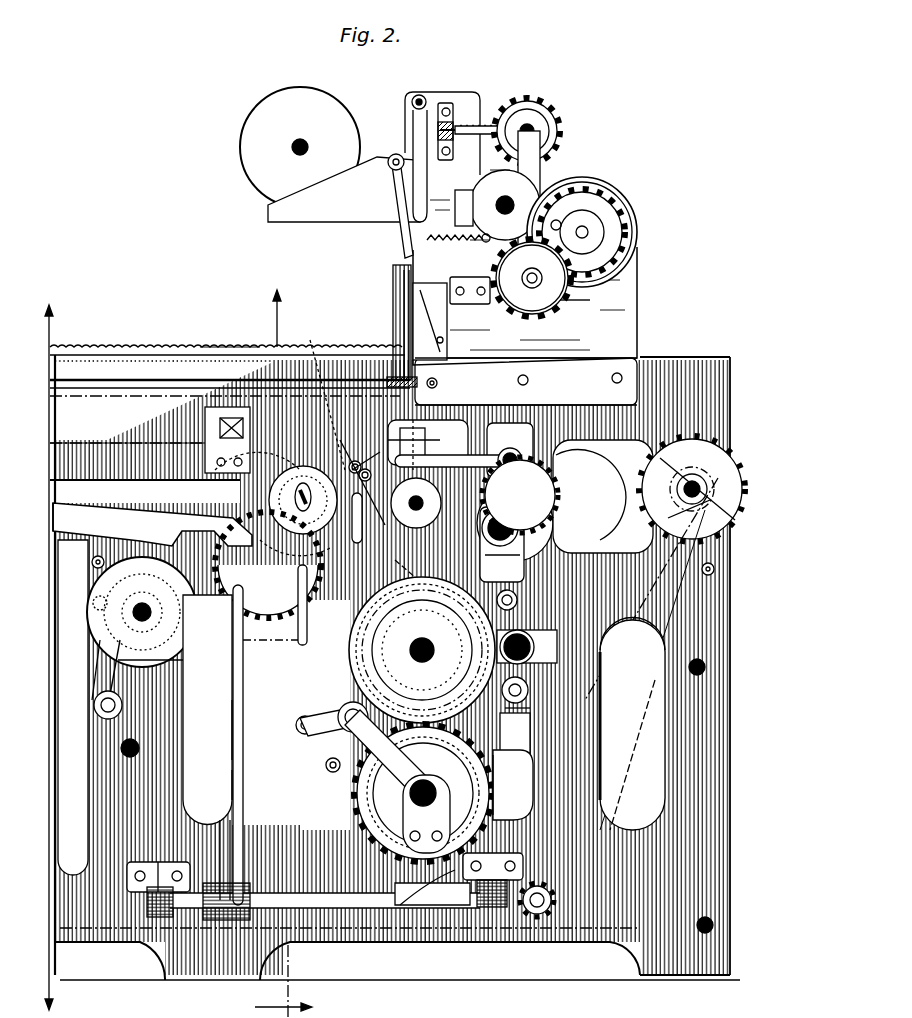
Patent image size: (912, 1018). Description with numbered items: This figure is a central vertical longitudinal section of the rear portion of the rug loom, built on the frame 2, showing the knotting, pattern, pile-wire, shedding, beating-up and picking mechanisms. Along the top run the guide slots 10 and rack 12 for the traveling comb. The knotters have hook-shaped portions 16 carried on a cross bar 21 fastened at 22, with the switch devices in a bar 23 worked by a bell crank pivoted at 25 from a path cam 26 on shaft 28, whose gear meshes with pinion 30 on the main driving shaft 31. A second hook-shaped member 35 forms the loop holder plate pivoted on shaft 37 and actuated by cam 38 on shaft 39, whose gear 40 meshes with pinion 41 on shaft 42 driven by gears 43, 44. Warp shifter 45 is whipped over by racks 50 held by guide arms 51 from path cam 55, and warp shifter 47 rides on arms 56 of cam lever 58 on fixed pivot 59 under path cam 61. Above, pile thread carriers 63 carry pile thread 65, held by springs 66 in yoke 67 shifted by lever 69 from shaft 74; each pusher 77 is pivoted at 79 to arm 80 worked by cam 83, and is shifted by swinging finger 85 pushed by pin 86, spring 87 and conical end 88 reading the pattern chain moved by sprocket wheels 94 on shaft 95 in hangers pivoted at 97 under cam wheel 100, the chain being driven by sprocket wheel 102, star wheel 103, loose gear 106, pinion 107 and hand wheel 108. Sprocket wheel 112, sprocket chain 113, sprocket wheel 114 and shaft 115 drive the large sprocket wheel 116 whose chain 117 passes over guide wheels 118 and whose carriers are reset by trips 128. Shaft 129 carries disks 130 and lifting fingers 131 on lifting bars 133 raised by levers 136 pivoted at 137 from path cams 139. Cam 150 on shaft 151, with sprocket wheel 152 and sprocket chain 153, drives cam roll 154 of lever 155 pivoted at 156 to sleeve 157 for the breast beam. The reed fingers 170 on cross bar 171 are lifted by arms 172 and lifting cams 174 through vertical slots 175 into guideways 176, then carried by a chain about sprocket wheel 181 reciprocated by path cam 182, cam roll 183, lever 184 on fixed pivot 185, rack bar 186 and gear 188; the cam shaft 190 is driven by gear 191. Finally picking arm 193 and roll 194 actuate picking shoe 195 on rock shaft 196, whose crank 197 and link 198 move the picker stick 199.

The frame 2 is at (736, 790).
The guide slots 10 is at (115, 378).
The rack 12 is at (223, 346).
The hook-shaped portion of the knotter 16 is at (412, 335).
The cross bar 21 is at (364, 439).
The fastening point 22 is at (357, 485).
The bar 23 is at (352, 460).
The pivot 25 is at (412, 575).
The path cam 26 is at (395, 640).
The shaft 28 is at (422, 650).
The pinion 30 is at (540, 655).
The main driving shaft 31 is at (560, 640).
The hook-shaped member 35 is at (522, 384).
The shaft 37 is at (500, 460).
The cam 38 is at (540, 523).
The shaft 39 is at (376, 528).
The gear 40 is at (428, 442).
The pinion 41 is at (502, 563).
The shaft 42 is at (500, 516).
The gear 43 is at (558, 505).
The gear 44 is at (499, 728).
The warp shifter 45 is at (440, 460).
The warp shifter 47 is at (350, 465).
The racks 50 is at (420, 420).
The guide arms 51 is at (428, 430).
The path cam 55 is at (585, 470).
The arms 56 is at (300, 596).
The cam lever 58 is at (416, 640).
The fixed pivot 59 is at (518, 602).
The path cam 61 is at (318, 733).
The pile thread carriers 63 is at (397, 285).
The pile thread 65 is at (453, 339).
The springs 66 is at (400, 300).
The yoke 67 is at (468, 306).
The lever 69 is at (395, 270).
The shaft 74 is at (512, 200).
The pusher or actuator 77 is at (425, 240).
The pivot 79 is at (396, 160).
The arm 80 is at (362, 172).
The cam 83 is at (252, 192).
The swinging finger 85 is at (412, 115).
The pin or plunger 86 is at (432, 128).
The spring 87 is at (464, 126).
The conical end 88 is at (488, 125).
The sprocket wheels 94 is at (560, 123).
The shaft 95 is at (530, 122).
The pivot 97 is at (530, 285).
The cam wheel 100 is at (505, 204).
The sprocket wheel 102 is at (575, 290).
The star wheel 103 is at (565, 290).
The loose gear 106 is at (612, 216).
The pinion 107 is at (480, 182).
The hand wheel 108 is at (637, 240).
The sprocket wheel 112 is at (575, 612).
The sprocket chain 113 is at (650, 600).
The sprocket wheel 114 is at (710, 508).
The shaft 115 is at (705, 486).
The large sprocket wheel 116 is at (728, 460).
The chain 117 is at (632, 725).
The guide wheels 118 is at (534, 918).
The trips 128 is at (716, 569).
The shaft 129 is at (285, 556).
The disks or separators 130 is at (303, 508).
The lifting fingers 131 is at (310, 445).
The lifting bars 133 is at (297, 692).
The levers 136 is at (296, 728).
The pivot 137 is at (530, 690).
The path cams 139 is at (520, 712).
The cam 150 is at (125, 635).
The shaft 151 is at (128, 618).
The sprocket wheel 152 is at (147, 721).
The sprocket chain 153 is at (182, 666).
The cam roll 154 is at (92, 603).
The lever 155 is at (95, 680).
The pivot 156 is at (100, 712).
The sleeve 157 is at (92, 562).
The fingers 170 is at (208, 455).
The cross bar 171 is at (232, 534).
The arms 172 is at (56, 516).
The lifting cams 174 is at (236, 690).
The vertical slots 175 is at (235, 498).
The horizontal slots or guideways 176 is at (75, 480).
The sprocket wheel 181 is at (318, 400).
The path cam 182 is at (345, 790).
The cam roll 183 is at (513, 785).
The lever 184 is at (325, 768).
The fixed pivot 185 is at (648, 745).
The rack bar 186 is at (297, 660).
The gear 188 is at (273, 640).
The shaft 190 is at (400, 790).
The gear 191 is at (514, 785).
The picking arm 193 is at (395, 778).
The roll 194 is at (400, 712).
The picking shoe 195 is at (440, 905).
The rock shaft 196 is at (330, 900).
The crank 197 is at (218, 798).
The link 198 is at (236, 750).
The picker stick 199 is at (212, 730).